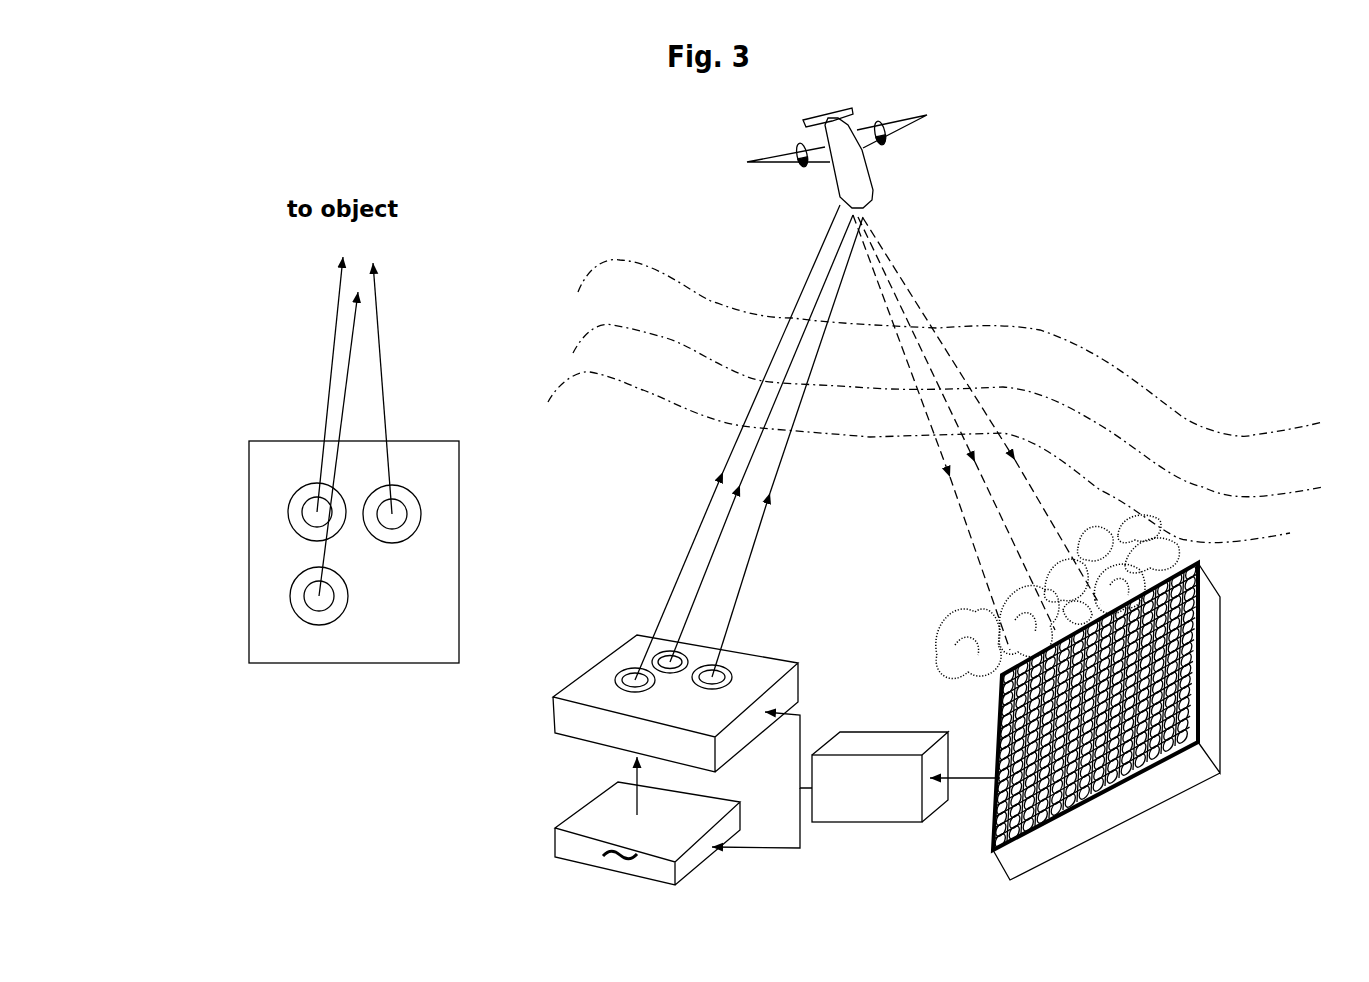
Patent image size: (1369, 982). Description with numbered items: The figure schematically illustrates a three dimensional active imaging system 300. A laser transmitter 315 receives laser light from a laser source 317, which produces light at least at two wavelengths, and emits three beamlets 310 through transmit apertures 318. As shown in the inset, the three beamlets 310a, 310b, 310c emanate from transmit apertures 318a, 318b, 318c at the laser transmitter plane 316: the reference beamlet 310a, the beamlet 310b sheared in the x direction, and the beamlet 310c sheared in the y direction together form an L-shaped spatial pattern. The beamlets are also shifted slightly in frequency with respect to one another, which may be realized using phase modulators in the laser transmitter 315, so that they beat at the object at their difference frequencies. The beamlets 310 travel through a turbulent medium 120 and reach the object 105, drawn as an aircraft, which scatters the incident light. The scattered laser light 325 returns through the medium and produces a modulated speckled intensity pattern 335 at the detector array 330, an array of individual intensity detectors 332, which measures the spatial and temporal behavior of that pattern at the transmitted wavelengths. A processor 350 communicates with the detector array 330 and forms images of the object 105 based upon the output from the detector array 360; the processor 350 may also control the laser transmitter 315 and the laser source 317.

The object 105 is at (870, 170).
The turbulent medium 120 is at (1107, 363).
The three dimensional active imaging system 300 is at (583, 227).
The beamlets 310 is at (680, 558).
The reference beamlet 310a is at (337, 309).
The x-sheared beamlet 310b is at (383, 366).
The y-sheared beamlet 310c is at (343, 376).
The laser transmitter 315 is at (565, 712).
The laser transmitter plane 316 is at (266, 454).
The laser source 317 is at (560, 818).
The transmit apertures 318 is at (665, 657).
The first transmit aperture 318a is at (302, 508).
The second transmit aperture 318b is at (392, 516).
The third transmit aperture 318c is at (306, 594).
The scattered laser light 325 is at (957, 367).
The detector array 330 is at (1213, 683).
The intensity detectors 332 is at (1188, 738).
The modulated speckled intensity pattern 335 is at (990, 640).
The processor 350 is at (880, 777).
The output from the detector array 360 is at (972, 783).